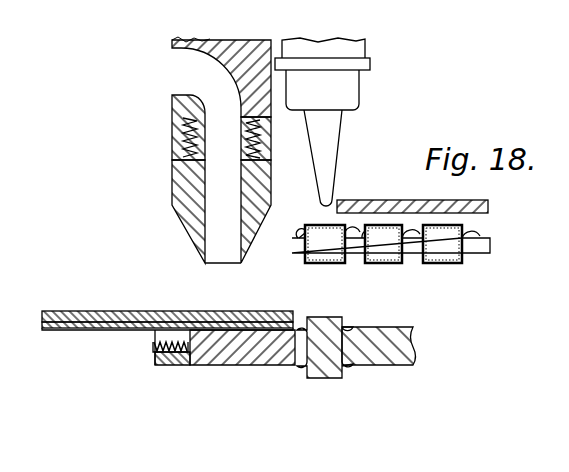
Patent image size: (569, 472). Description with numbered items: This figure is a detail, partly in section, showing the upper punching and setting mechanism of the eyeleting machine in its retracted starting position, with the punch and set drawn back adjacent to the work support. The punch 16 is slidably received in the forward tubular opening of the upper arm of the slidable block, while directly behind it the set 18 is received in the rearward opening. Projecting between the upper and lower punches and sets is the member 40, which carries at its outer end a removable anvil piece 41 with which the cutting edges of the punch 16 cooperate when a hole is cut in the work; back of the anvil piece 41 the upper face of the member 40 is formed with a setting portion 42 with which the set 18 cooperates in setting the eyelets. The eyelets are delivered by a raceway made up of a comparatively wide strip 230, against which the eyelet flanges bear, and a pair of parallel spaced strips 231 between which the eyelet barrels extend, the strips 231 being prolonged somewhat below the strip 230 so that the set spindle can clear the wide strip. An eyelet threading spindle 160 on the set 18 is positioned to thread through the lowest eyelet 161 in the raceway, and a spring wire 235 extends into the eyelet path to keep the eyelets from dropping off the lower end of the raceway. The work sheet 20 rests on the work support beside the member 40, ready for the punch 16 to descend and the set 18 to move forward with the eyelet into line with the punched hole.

The punch 16 is at (183, 186).
The set 18 is at (347, 90).
The eyelet threading spindle 160 is at (327, 157).
The strip 230 is at (488, 205).
The strips 231 is at (477, 245).
The eyelet 161 is at (330, 257).
The spring wire 235 is at (305, 215).
The sheet 20 is at (118, 310).
The anvil piece 41 is at (238, 365).
The setting portions 42 is at (335, 315).
The member 40 is at (397, 343).